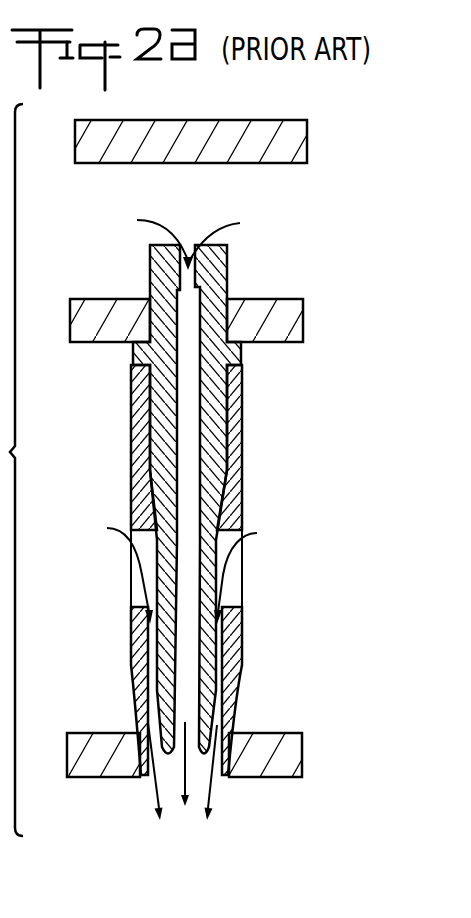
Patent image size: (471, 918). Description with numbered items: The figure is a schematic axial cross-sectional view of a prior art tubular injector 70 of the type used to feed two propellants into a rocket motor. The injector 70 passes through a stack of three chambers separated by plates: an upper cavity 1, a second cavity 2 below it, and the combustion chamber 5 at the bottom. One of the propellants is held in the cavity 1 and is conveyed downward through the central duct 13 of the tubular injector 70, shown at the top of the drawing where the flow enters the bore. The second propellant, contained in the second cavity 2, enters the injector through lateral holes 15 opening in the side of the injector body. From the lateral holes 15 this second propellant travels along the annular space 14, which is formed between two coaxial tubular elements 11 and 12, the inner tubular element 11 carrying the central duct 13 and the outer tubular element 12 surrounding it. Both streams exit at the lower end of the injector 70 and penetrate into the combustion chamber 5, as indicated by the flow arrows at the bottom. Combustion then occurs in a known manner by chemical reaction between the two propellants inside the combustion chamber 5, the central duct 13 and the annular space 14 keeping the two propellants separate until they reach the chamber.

The cavity 1 is at (290, 206).
The second cavity 2 is at (72, 410).
The combustion chamber 5 is at (300, 830).
The tubular element 11 is at (208, 417).
The tubular element 12 is at (227, 508).
The central duct 13 is at (192, 320).
The annular space 14 is at (220, 652).
The lateral holes 15 is at (142, 603).
The tubular injector 70 is at (164, 497).